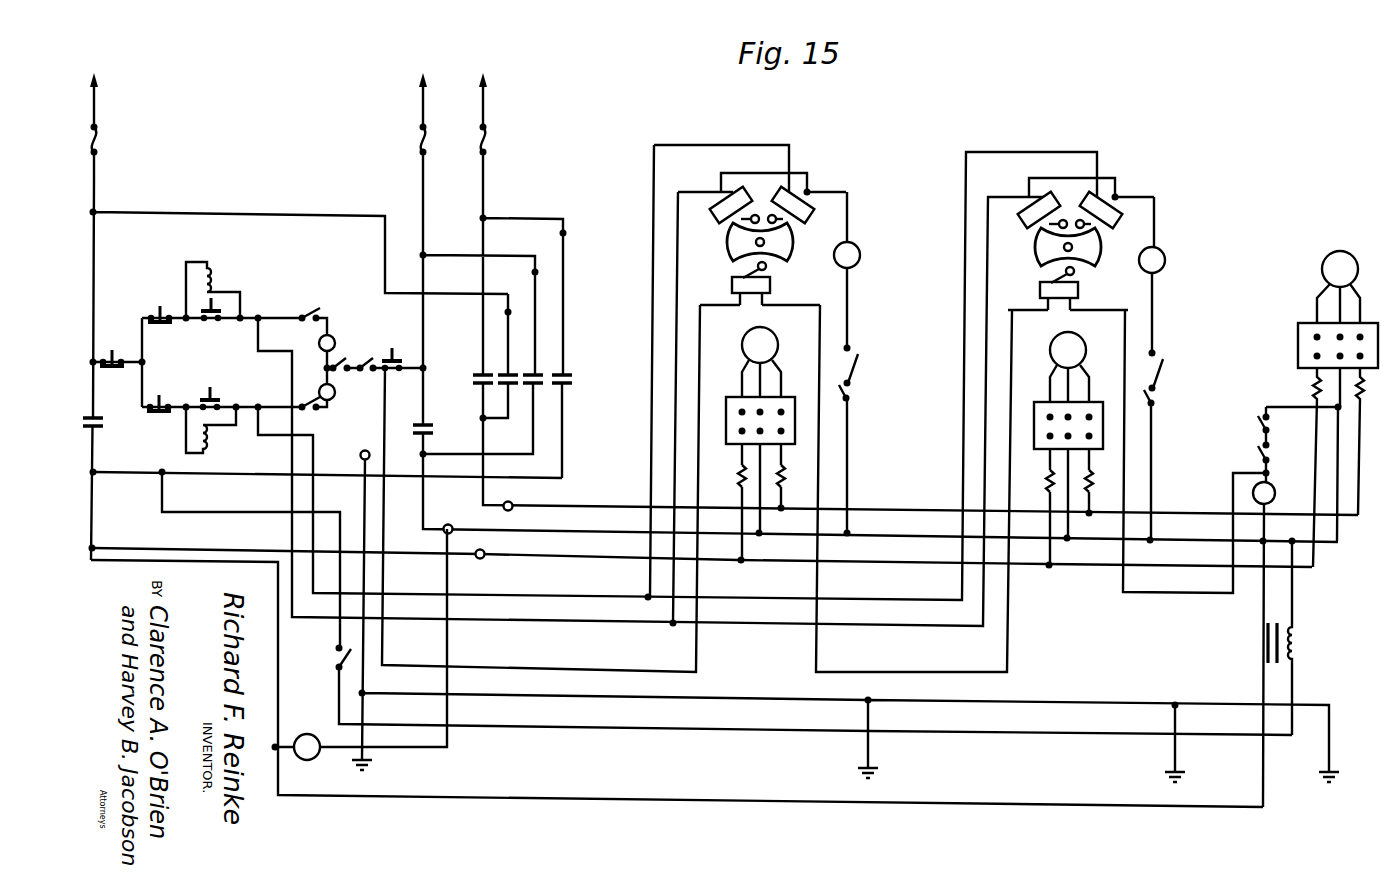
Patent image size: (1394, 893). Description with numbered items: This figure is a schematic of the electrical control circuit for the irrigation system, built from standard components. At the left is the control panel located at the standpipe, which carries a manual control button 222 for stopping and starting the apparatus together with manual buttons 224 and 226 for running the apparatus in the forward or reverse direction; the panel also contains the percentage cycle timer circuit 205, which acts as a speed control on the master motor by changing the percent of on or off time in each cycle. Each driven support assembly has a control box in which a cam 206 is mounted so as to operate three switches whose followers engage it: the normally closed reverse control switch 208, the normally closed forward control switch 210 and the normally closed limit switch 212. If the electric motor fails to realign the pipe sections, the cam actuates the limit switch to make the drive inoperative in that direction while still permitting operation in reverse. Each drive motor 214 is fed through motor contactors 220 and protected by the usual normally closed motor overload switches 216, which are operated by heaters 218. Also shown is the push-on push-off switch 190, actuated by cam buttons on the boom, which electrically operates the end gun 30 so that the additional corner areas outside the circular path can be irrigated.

The end gun 30 is at (1266, 655).
The push-on push-off switch 190 is at (321, 651).
The percentage cycle timer circuit 205 is at (298, 742).
The cam 206 is at (787, 243).
The normally closed reverse control switch 208 is at (715, 216).
The normally closed forward control switch 210 is at (806, 212).
The normally closed limit switch 212 is at (752, 296).
The motor 214 is at (773, 350).
The normally closed motor overload switch 216 is at (847, 362).
The heater 218 is at (785, 488).
The motor contactor 220 is at (787, 423).
The manual control button 222 is at (121, 341).
The manual forward button 224 is at (160, 306).
The manual reverse button 226 is at (159, 414).